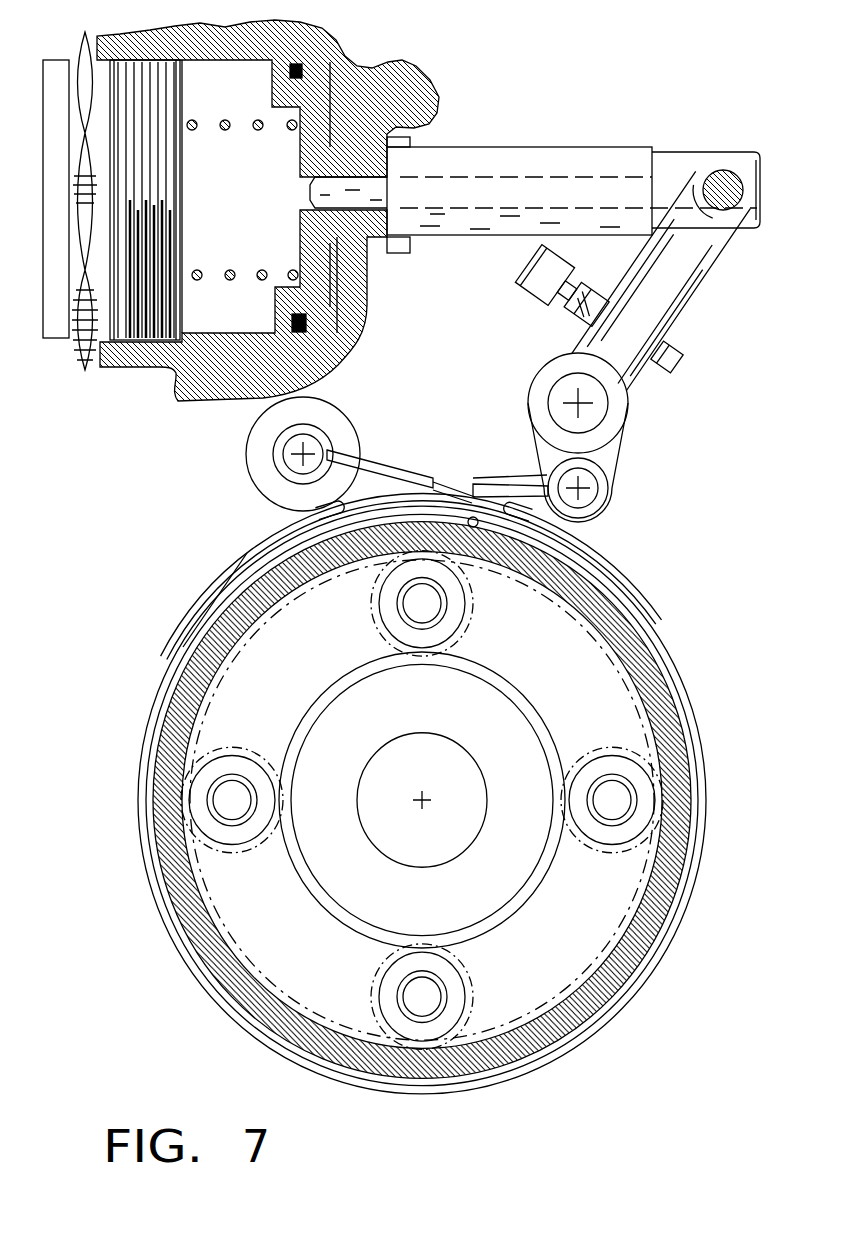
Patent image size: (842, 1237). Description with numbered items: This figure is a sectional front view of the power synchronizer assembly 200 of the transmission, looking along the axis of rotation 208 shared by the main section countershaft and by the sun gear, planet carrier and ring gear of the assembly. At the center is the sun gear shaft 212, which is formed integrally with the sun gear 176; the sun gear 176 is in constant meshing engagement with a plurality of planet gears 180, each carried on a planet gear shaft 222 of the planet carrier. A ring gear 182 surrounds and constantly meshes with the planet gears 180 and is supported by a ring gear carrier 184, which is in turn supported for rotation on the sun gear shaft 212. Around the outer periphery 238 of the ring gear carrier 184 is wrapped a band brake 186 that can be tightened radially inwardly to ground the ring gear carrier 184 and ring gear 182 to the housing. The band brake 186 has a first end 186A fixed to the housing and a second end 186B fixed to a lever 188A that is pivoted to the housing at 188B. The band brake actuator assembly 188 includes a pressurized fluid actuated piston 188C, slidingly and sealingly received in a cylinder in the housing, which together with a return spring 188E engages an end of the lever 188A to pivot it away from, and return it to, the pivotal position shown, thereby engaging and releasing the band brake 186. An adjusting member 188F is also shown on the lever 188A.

The sun gear 176 is at (306, 882).
The planet gears 180 is at (245, 758).
The ring gear 182 is at (192, 678).
The ring gear carrier 184 is at (196, 963).
The band brake 186 is at (694, 667).
The first end of brake band 186A is at (320, 432).
The second end of brake band 186B is at (608, 492).
The band brake actuator assembly 188 is at (457, 138).
The lever 188A is at (700, 288).
The pivot 188B is at (597, 405).
The pressurized fluid actuated piston 188C is at (386, 66).
The return spring 188E is at (197, 128).
The adjustment bolt 188F is at (540, 314).
The power synchronizer assembly 200 is at (195, 559).
The axis of rotation 208 is at (427, 796).
The sun gear shaft 212 is at (461, 828).
The planet gear shafts 222 is at (245, 812).
The outer periphery of ring gear carrier 238 is at (474, 527).